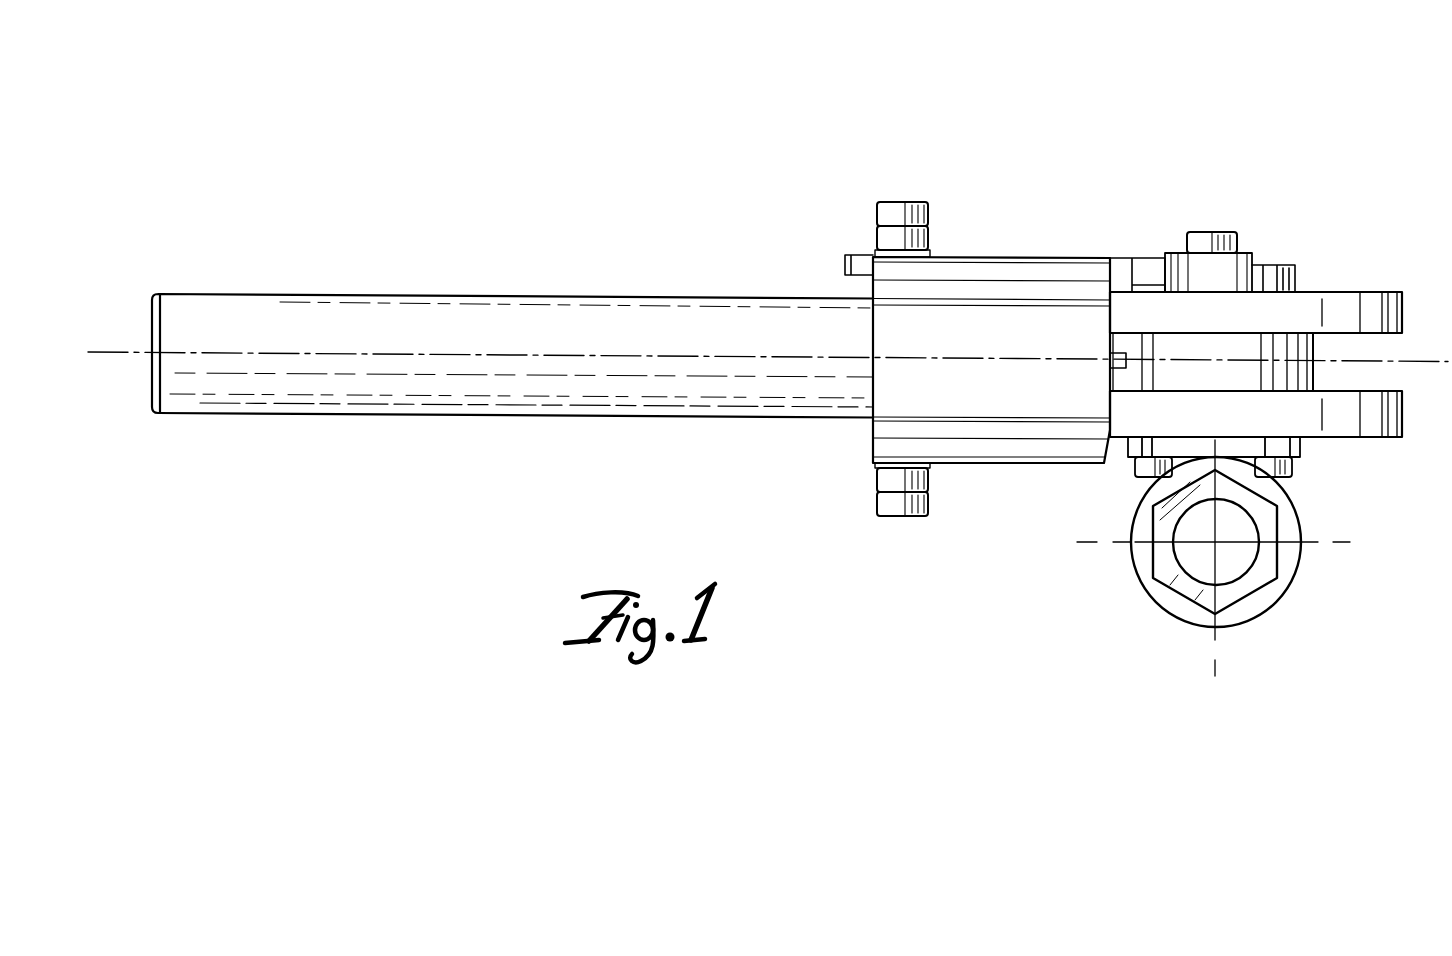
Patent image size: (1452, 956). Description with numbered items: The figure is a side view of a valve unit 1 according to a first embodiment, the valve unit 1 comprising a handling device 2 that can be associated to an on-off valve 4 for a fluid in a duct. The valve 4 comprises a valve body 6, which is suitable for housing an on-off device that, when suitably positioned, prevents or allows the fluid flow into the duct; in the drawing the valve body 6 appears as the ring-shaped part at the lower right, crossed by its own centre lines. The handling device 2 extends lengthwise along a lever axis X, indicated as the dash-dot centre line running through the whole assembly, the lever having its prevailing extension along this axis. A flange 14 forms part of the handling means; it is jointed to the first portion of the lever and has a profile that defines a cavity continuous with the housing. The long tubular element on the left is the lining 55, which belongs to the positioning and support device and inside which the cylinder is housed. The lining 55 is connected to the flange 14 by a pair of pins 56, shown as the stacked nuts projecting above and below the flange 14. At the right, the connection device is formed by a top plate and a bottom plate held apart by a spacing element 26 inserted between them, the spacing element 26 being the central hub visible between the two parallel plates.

The valve unit 1 is at (1213, 176).
The handling device 2 is at (780, 245).
The on-off valve 4 is at (1122, 571).
The valve body 6 is at (1181, 608).
The flange 14 is at (1021, 256).
The spacing element 26 is at (1225, 356).
The lining 55 is at (270, 392).
The pins 56 is at (911, 196).
The lever axis X is at (88, 352).